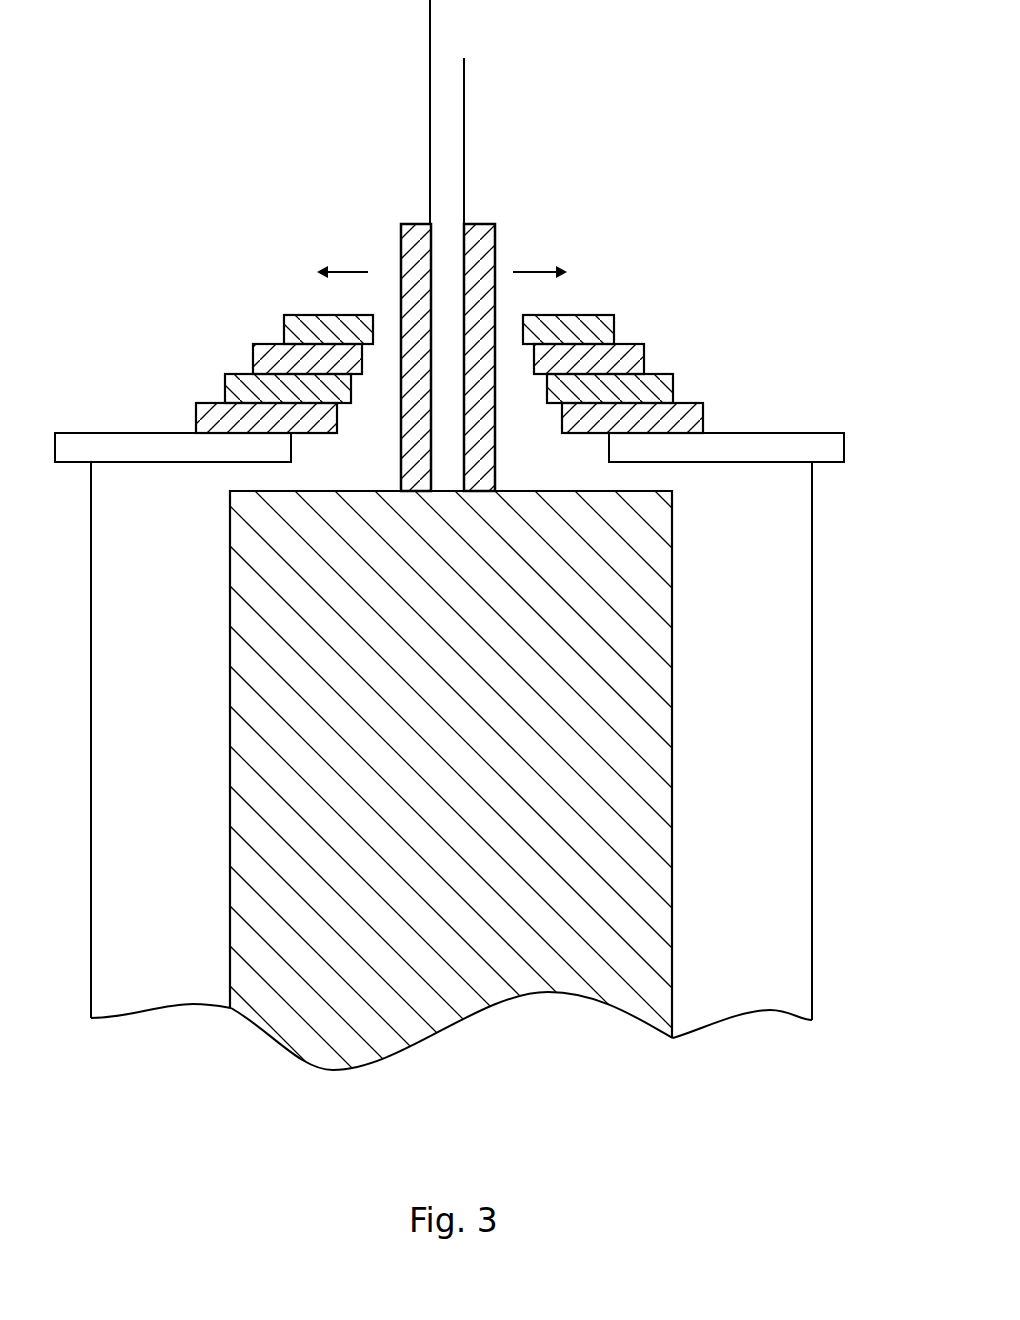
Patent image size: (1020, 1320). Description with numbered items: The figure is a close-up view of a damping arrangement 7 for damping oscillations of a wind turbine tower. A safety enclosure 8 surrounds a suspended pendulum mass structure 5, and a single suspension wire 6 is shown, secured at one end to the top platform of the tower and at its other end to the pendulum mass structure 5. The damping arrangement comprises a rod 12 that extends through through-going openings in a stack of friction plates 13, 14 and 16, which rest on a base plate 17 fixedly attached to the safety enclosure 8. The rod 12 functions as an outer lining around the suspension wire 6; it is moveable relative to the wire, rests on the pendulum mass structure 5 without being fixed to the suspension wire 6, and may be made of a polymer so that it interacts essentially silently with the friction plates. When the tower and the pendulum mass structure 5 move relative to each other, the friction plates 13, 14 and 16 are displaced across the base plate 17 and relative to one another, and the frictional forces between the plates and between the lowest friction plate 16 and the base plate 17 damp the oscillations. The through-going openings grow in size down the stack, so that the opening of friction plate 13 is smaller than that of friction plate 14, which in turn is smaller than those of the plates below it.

The pendulum mass structure 5 is at (303, 1030).
The suspension wire 6 is at (448, 150).
The coating device 7 is at (217, 250).
The safety enclosure 8 is at (819, 610).
The rod 12 is at (490, 238).
The friction plate 13 is at (606, 322).
The friction plate 14 is at (640, 349).
The friction plate 16 is at (667, 381).
The base plate 17 is at (707, 405).